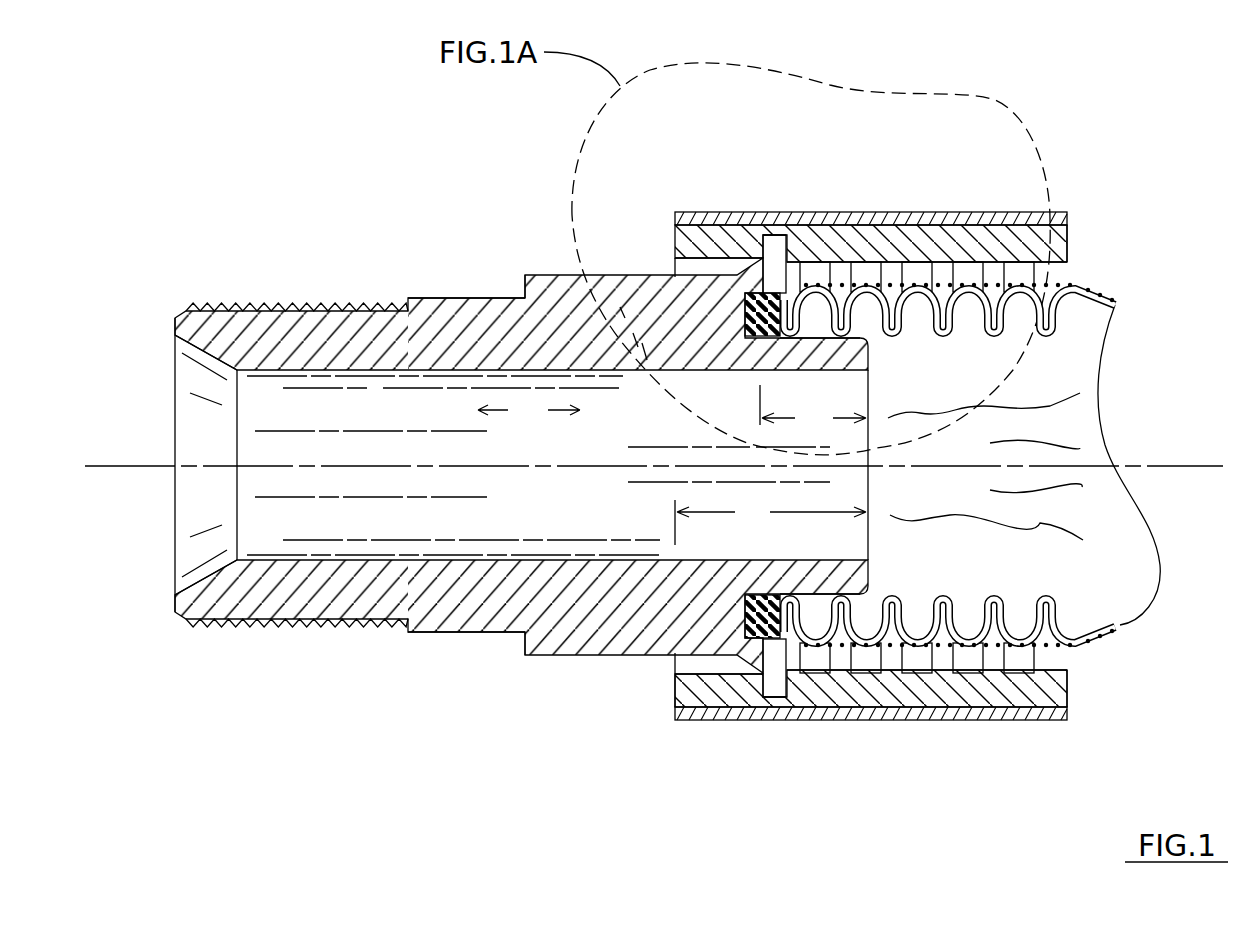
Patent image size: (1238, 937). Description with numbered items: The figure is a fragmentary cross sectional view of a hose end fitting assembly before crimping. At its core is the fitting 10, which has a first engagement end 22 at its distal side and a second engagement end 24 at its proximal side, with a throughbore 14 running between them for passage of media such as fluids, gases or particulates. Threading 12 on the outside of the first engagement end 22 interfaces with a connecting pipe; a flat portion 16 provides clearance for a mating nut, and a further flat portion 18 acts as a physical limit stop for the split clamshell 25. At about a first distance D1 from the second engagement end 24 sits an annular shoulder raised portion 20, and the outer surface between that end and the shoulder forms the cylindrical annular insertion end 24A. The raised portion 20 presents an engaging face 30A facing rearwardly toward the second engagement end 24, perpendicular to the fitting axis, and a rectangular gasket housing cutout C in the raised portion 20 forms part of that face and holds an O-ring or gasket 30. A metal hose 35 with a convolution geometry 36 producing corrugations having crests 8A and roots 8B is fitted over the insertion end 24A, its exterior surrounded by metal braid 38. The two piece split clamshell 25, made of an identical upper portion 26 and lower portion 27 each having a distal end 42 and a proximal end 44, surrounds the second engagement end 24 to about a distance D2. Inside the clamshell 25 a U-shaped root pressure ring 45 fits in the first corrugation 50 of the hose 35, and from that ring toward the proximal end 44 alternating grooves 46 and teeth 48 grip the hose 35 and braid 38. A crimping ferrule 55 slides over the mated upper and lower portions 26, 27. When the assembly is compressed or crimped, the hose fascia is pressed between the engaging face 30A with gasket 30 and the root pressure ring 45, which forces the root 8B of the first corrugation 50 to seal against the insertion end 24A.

The fitting 10 is at (197, 297).
The threading 12 is at (333, 300).
The throughbore 14 is at (538, 465).
The flat portion 16 is at (417, 297).
The flat portion 18 is at (538, 273).
The annular shoulder raised portion 20 is at (688, 230).
The first engagement end 22 is at (178, 600).
The second engagement end 24 is at (868, 573).
The cylindrical annular insertion end 24A is at (855, 312).
The split clamshell 25 is at (672, 229).
The upper portion 26 is at (673, 240).
The lower portion 27 is at (672, 694).
The gasket 30 is at (765, 240).
The engaging face 30A is at (780, 236).
The metal hose 35 is at (1113, 335).
The convolution geometry 36 is at (1025, 331).
The metal braid 38 is at (987, 222).
The distal end 42 is at (613, 295).
The proximal end 44 is at (1068, 222).
The root pressure ring 45 is at (860, 224).
The grooves 46 is at (806, 232).
The teeth 48 is at (888, 224).
The crests 8A is at (1005, 222).
The roots 8B is at (1043, 226).
The first corrugation 50 is at (803, 340).
The crimping ferrule 55 is at (950, 223).
The gasket housing cutout C is at (642, 343).
The first distance D1 is at (813, 407).
The distance D2 is at (770, 522).